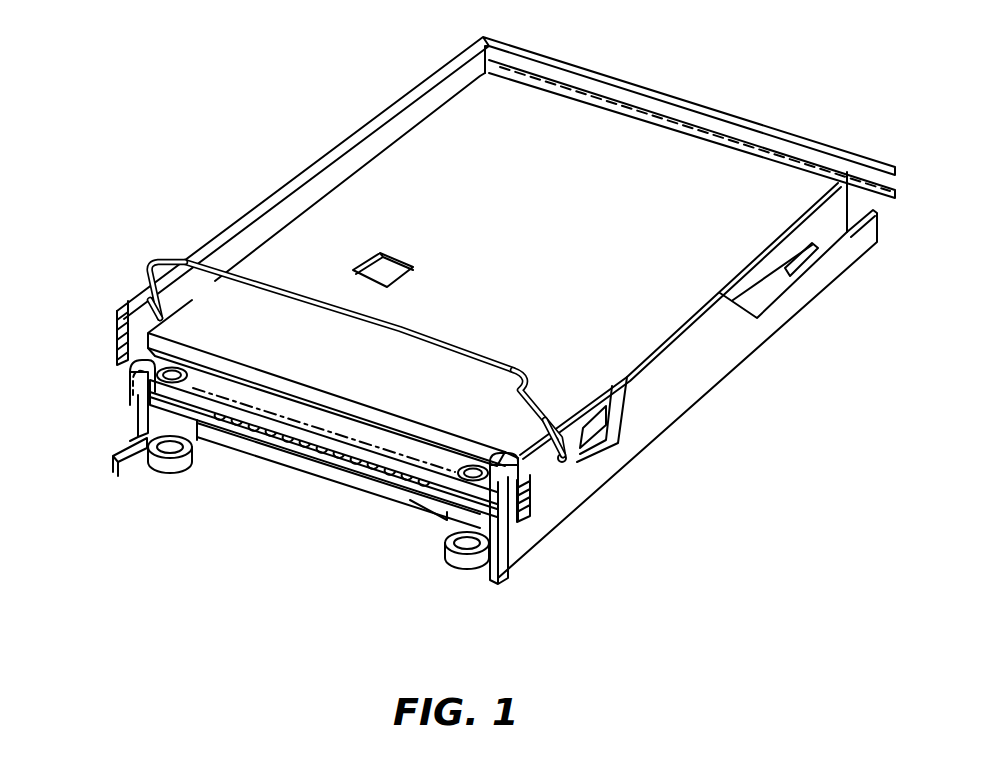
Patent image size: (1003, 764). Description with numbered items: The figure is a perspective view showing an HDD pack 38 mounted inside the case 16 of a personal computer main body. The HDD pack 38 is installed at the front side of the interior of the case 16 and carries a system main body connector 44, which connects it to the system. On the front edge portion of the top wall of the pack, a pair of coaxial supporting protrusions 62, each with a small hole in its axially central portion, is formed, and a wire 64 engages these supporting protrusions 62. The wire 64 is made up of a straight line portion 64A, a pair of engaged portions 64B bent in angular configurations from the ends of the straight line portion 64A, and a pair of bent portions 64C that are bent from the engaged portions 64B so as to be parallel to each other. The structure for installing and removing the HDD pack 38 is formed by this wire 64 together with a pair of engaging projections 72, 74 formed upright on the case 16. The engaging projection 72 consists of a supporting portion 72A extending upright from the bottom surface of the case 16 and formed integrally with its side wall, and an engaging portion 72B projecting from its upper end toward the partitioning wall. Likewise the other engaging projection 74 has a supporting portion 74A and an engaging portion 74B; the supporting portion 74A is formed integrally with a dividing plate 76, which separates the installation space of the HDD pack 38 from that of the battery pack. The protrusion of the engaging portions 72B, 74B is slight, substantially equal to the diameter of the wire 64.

The case 16 is at (387, 110).
The HDD pack 38 is at (612, 150).
The system main body connector 44 is at (290, 463).
The supporting protrusions 62 is at (562, 460).
The wire 64 is at (336, 329).
The straight line portion 64A is at (292, 292).
The engaged portions 64B is at (160, 262).
The bent portions 64C is at (150, 283).
The engaging projection 72 is at (488, 524).
The supporting portion 72A is at (490, 580).
The engaging portion 72B is at (493, 462).
The engaging projection 74 is at (81, 400).
The supporting portion 74A is at (130, 420).
The engaging portion 74B is at (130, 370).
The dividing plate 76 is at (740, 352).